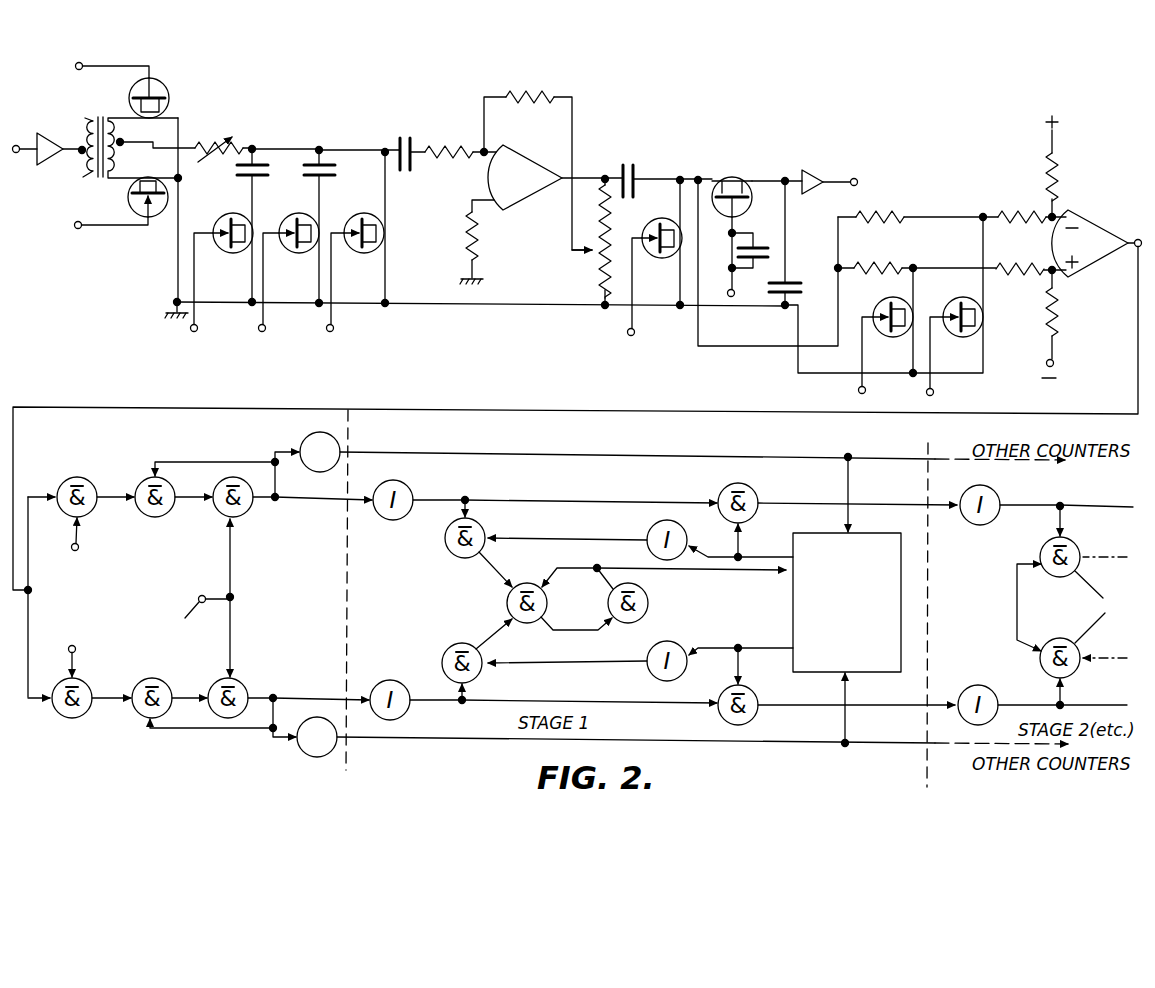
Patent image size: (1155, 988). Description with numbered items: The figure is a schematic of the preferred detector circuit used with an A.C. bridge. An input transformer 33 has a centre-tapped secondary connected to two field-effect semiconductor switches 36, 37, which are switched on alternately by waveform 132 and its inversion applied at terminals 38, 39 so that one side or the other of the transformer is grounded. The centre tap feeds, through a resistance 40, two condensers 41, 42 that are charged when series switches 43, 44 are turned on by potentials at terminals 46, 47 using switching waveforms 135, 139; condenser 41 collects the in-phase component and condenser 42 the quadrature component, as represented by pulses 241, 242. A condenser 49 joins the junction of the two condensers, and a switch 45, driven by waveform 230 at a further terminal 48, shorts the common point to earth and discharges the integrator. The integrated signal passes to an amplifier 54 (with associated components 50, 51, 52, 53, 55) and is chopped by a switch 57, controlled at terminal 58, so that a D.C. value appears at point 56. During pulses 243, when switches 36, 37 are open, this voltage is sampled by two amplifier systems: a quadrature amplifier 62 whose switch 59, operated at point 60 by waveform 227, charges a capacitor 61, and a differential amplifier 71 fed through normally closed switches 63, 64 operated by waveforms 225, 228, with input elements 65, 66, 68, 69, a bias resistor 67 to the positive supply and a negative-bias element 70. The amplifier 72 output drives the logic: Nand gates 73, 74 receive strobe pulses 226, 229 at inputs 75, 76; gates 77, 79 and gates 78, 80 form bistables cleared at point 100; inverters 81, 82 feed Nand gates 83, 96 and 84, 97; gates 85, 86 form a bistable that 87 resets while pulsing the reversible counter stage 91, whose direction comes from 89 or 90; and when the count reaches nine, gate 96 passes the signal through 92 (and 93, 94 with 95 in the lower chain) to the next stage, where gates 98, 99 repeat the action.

The input transformer 33 is at (82, 173).
The semiconductor switch 36 is at (168, 92).
The semiconductor switch 37 is at (127, 193).
The terminal 38 is at (75, 66).
The terminal 39 is at (75, 224).
The resistance 40 is at (214, 140).
The condenser 41 is at (240, 178).
The condenser 42 is at (307, 178).
The switch 43 is at (222, 253).
The switch 44 is at (293, 253).
The switch 45 is at (355, 253).
The terminal 46 is at (198, 328).
The terminal 47 is at (266, 328).
The control terminal 48 is at (334, 328).
The condenser 49 is at (398, 137).
The input resistor 50 is at (442, 158).
The feedback resistor 51 is at (549, 95).
The potentiometer wiper 52 is at (601, 258).
The potentiometer 53 is at (600, 284).
The amplifier 54 is at (523, 186).
The resistor 55 is at (465, 230).
The point 56 is at (678, 177).
The switch 57 is at (660, 258).
The control terminal 58 is at (636, 332).
The switch 59 is at (732, 177).
The point 60 is at (734, 296).
The capacitor 61 is at (795, 281).
The amplifier 62 is at (811, 173).
The semiconductor switch 63 is at (985, 323).
The semiconductor switch 64 is at (879, 303).
The input element 65 is at (887, 211).
The input element 66 is at (1011, 212).
The resistor 67 is at (1058, 190).
The input element 68 is at (892, 263).
The resistor 69 is at (1018, 265).
The element 70 is at (1058, 314).
The differential amplifier 71 is at (1098, 249).
The amplifier 72 is at (1137, 239).
The Nand gate 73 is at (92, 481).
The Nand gate 74 is at (89, 683).
The input 75 is at (79, 545).
The input 76 is at (76, 647).
The Nand gate 77 is at (163, 517).
The Nand gate 78 is at (166, 682).
The Nand gate 79 is at (245, 517).
The Nand gate 80 is at (244, 682).
The inverter 81 is at (410, 491).
The inverter 82 is at (381, 684).
The Nand gate 83 is at (484, 529).
The Nand gate 84 is at (442, 655).
The Nand gate 85 is at (507, 600).
The Nand gate 86 is at (580, 600).
The gate 87 is at (643, 612).
The gate 89 is at (306, 441).
The gate 90 is at (298, 746).
The reversible counter stage 91 is at (869, 535).
The inverter 92 is at (1001, 496).
The inverter 93 is at (970, 685).
The inverter 94 is at (648, 657).
The inverter 95 is at (648, 529).
The Nand gate 96 is at (754, 493).
The Nand gate 97 is at (753, 716).
The NAND gate 98 is at (1076, 541).
The NAND gate 99 is at (1074, 672).
The point 100 is at (196, 623).
The waveform 132 is at (65, 52).
The switching waveform 135 is at (184, 336).
The switching waveform 139 is at (253, 336).
The waveform 225 is at (943, 384).
The strobe pulse 226 is at (63, 533).
The waveform 227 is at (720, 275).
The waveform 228 is at (850, 384).
The strobe pulse 229 is at (62, 661).
The waveform 230 is at (320, 336).
The pulses 241 is at (498, 83).
The pulses 242 is at (421, 70).
The pulses 243 is at (466, 70).